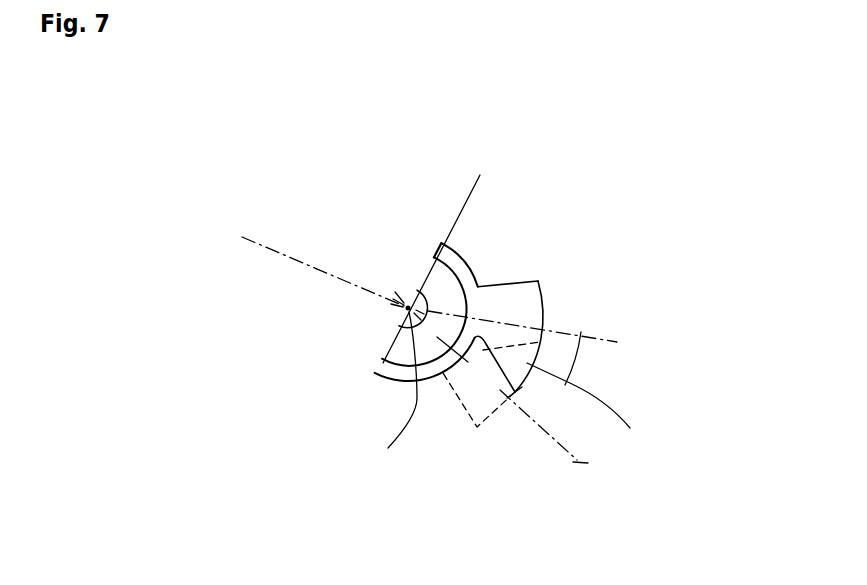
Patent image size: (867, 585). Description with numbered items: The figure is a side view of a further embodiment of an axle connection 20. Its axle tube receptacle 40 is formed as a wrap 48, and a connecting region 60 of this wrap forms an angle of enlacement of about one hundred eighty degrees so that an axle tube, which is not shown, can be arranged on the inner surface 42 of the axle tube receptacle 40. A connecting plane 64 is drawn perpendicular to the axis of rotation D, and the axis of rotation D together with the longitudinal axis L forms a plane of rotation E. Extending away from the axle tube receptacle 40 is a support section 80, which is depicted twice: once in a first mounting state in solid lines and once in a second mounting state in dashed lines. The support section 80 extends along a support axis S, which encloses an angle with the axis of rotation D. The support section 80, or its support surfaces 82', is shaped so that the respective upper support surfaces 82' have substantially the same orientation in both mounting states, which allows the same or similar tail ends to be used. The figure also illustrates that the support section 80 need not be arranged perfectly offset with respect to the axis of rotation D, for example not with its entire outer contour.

The axle connection 20 is at (404, 222).
The axle tube receptacle 40 is at (464, 239).
The wrap 48 is at (461, 304).
The inner surface 42 is at (398, 352).
The connecting region 60 is at (337, 434).
The connecting plane 64 is at (379, 378).
The support section 80 is at (562, 280).
The support surfaces 82' is at (612, 282).
The longitudinal axis L is at (407, 297).
The support axis S is at (610, 335).
The axis of rotation D is at (295, 295).
The plane of rotation E is at (255, 242).